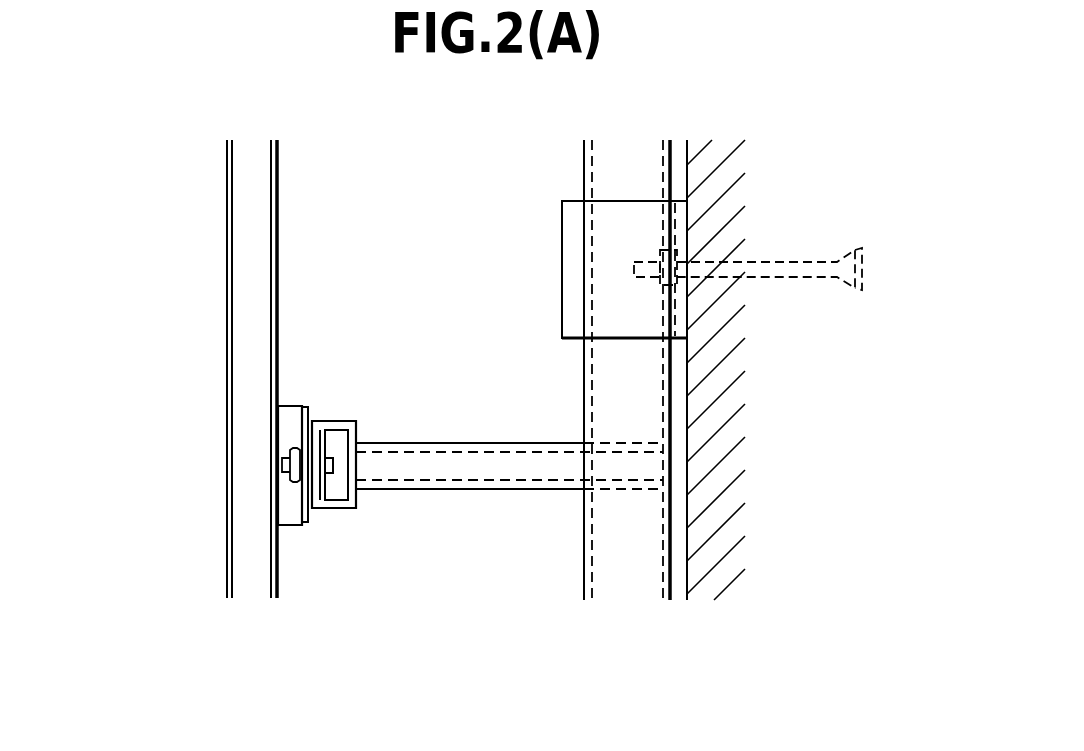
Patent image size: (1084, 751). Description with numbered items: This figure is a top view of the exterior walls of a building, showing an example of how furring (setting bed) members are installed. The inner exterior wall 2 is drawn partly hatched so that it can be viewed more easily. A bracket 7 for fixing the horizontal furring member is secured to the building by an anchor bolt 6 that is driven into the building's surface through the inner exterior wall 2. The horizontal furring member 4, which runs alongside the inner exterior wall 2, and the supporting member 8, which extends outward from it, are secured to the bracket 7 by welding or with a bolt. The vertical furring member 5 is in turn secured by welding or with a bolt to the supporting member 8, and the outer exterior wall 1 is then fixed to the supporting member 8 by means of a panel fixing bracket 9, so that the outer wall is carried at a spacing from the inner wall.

The outer exterior wall 1 is at (237, 472).
The inner exterior wall 2 is at (740, 560).
The horizontal furring member 4 is at (582, 572).
The vertical furring member 5 is at (350, 515).
The anchor bolt 6 is at (797, 277).
The bracket for securing the furring members 7 is at (563, 210).
The supporting member 8 is at (465, 490).
The bracket for securing a panel 9 is at (292, 526).